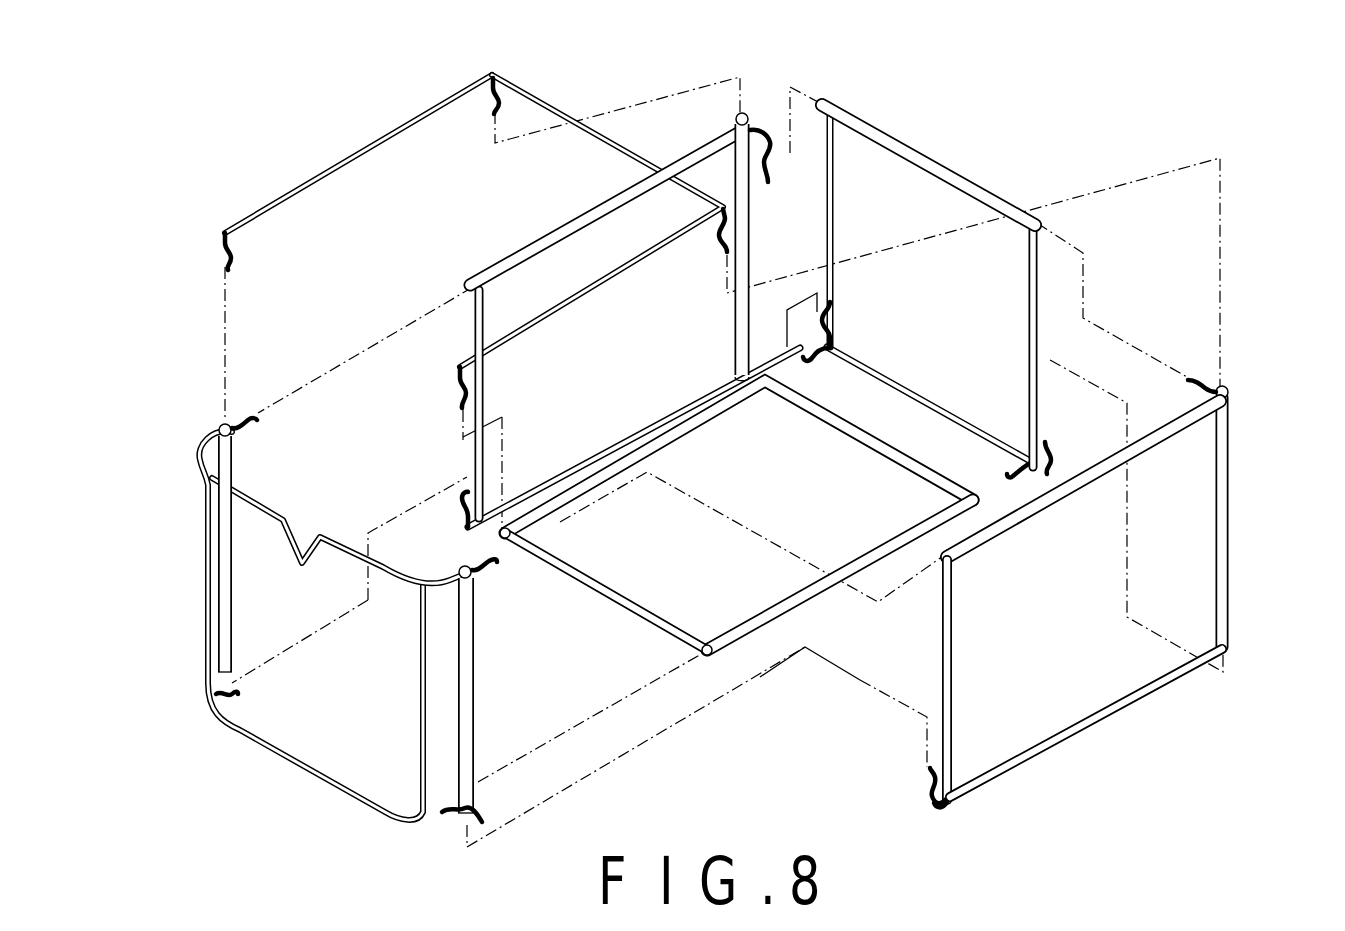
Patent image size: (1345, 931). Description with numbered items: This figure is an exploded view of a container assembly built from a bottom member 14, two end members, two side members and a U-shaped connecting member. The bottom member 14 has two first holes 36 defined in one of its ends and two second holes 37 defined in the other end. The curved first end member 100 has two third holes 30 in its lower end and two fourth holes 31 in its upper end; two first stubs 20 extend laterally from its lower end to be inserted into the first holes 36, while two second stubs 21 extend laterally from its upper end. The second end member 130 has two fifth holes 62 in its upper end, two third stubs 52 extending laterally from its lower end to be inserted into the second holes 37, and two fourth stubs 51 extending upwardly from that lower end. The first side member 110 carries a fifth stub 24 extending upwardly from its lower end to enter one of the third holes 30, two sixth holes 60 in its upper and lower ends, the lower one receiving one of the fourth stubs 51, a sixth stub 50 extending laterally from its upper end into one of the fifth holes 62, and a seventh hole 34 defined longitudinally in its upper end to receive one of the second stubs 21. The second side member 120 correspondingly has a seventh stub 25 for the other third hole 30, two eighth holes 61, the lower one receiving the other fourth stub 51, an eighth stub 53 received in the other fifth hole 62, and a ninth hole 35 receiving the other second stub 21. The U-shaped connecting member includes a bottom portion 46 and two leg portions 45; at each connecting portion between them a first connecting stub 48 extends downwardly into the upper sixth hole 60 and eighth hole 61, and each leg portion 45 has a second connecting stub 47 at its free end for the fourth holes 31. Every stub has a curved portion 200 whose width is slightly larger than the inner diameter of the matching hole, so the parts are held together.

The bottom member 14 is at (688, 548).
The first stubs 20 is at (222, 716).
The second stubs 21 is at (242, 418).
The fifth stub 24 is at (935, 803).
The seventh stub 25 is at (463, 505).
The third holes 30 is at (207, 689).
The fourth holes 31 is at (220, 427).
The seventh hole 34 is at (944, 572).
The ninth hole 35 is at (469, 283).
The first holes 36 is at (498, 534).
The second holes 37 is at (783, 390).
The leg portions 45 is at (363, 153).
The bottom portion 46 is at (562, 103).
The second connecting stubs 47 is at (232, 263).
The first connecting stubs 48 is at (488, 113).
The sixth stub 50 is at (1188, 376).
The fourth stubs 51 is at (835, 320).
The third stubs 52 is at (812, 362).
The eighth stub 53 is at (768, 184).
The sixth holes 60 is at (1229, 390).
The eighth holes 61 is at (746, 114).
The fifth holes 62 is at (822, 101).
The first end member 100 is at (335, 765).
The first side member 110 is at (1070, 592).
The second side member 120 is at (597, 236).
The second end member 130 is at (965, 205).
The curved portion 200 is at (927, 775).